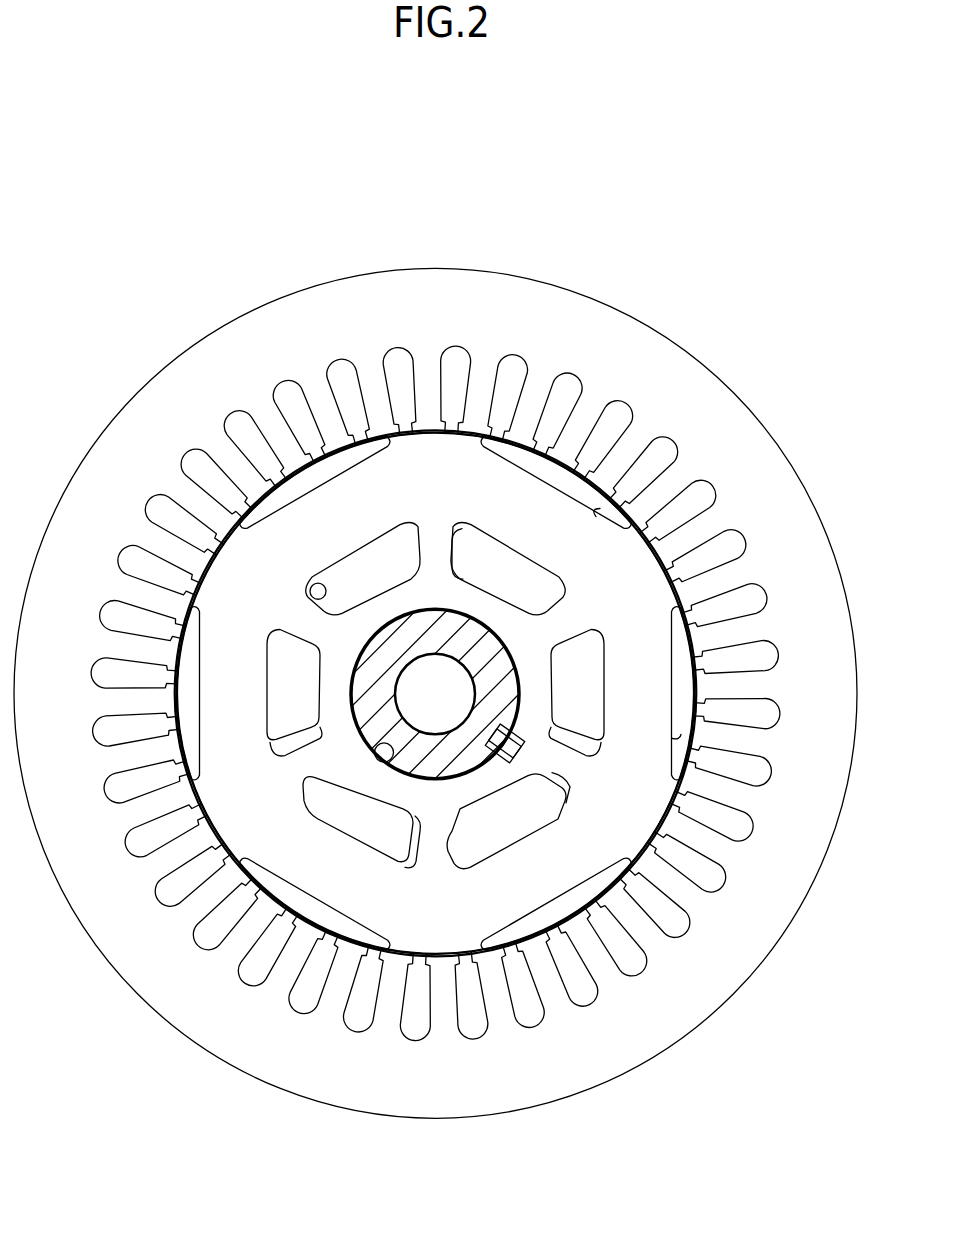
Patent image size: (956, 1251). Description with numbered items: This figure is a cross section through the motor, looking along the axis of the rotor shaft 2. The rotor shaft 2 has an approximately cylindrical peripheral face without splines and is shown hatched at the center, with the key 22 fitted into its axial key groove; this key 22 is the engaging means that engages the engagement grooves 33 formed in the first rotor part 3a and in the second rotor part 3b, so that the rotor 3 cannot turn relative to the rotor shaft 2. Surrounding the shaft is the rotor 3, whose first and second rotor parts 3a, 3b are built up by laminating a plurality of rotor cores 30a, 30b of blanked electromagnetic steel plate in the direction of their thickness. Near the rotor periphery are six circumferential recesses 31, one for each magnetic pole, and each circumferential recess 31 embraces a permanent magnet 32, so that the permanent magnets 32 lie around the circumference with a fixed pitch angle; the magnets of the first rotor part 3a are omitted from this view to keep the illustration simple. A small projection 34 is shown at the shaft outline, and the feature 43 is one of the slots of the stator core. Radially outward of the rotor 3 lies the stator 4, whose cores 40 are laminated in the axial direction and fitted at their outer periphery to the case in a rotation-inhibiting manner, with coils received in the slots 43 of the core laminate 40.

The rotor shaft 2 is at (418, 650).
The rotor 3 is at (228, 537).
The first rotor part 3a is at (310, 591).
The second rotor part 3b is at (332, 602).
The stator 4 is at (791, 462).
The key 22 is at (522, 741).
The rotor core 30a is at (652, 601).
The rotor core 30b is at (466, 552).
The circumferential recess 31 is at (596, 518).
The permanent magnet 32 is at (672, 675).
The engagement groove 33 is at (492, 760).
The projection 34 is at (389, 755).
The core 40 is at (712, 373).
The slot 43 is at (701, 547).